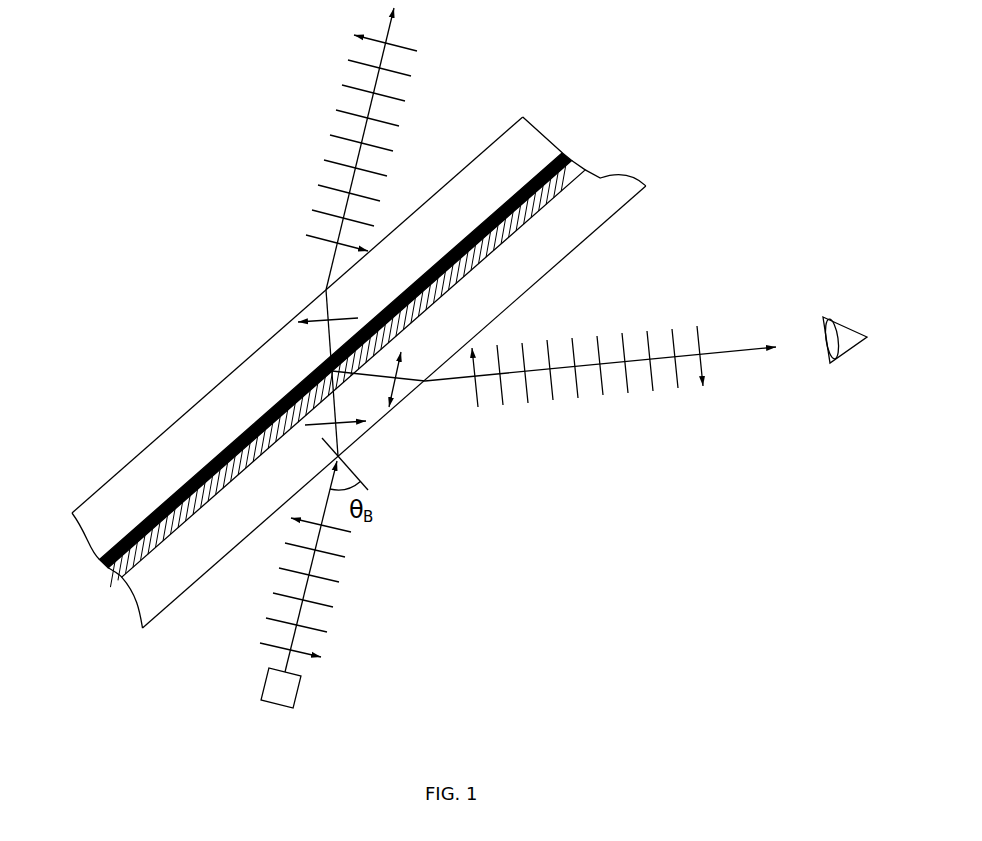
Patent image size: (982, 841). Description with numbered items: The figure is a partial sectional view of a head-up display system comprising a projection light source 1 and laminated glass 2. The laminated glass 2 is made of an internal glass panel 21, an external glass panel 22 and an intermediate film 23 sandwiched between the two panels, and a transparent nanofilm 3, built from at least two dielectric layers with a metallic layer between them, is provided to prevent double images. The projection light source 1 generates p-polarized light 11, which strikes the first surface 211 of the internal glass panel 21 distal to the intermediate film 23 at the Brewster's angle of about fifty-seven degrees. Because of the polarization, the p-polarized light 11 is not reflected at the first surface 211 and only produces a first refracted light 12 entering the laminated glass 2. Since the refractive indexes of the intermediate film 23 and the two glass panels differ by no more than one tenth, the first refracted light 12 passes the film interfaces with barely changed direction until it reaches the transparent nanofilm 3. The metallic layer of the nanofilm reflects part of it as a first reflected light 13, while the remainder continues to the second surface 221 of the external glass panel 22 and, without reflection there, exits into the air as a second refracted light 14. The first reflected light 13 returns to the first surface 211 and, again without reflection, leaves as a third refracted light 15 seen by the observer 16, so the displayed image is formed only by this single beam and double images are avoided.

The projection light source 1 is at (293, 690).
The p-polarized light 11 is at (337, 585).
The first refracted light 12 is at (298, 321).
The first reflected light 13 is at (402, 354).
The second refracted light 14 is at (345, 140).
The third refracted light 15 is at (703, 377).
The observer 16 is at (835, 318).
The laminated glass 2 is at (667, 105).
The internal glass panel 21 is at (582, 222).
The first surface 211 is at (247, 536).
The external glass panel 22 is at (528, 148).
The second surface 221 is at (168, 427).
The intermediate film 23 is at (577, 167).
The transparent nanofilm 3 is at (253, 424).